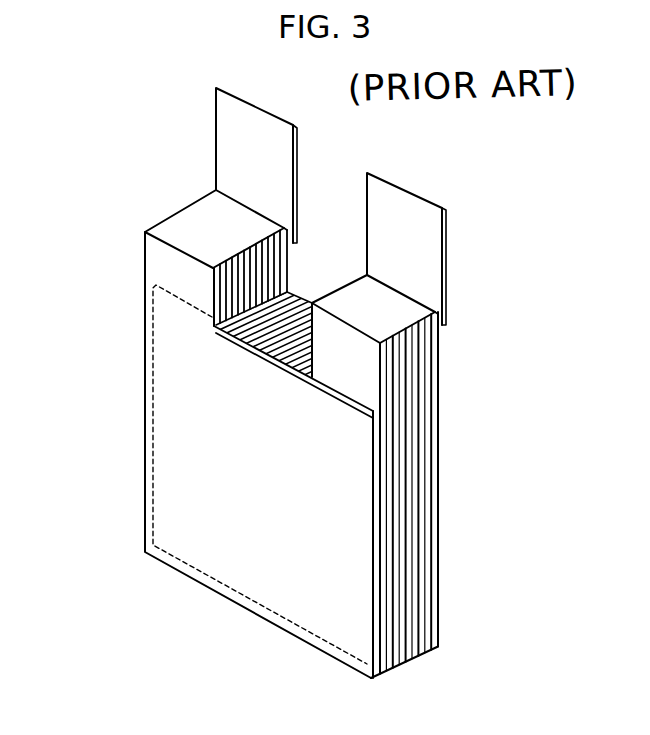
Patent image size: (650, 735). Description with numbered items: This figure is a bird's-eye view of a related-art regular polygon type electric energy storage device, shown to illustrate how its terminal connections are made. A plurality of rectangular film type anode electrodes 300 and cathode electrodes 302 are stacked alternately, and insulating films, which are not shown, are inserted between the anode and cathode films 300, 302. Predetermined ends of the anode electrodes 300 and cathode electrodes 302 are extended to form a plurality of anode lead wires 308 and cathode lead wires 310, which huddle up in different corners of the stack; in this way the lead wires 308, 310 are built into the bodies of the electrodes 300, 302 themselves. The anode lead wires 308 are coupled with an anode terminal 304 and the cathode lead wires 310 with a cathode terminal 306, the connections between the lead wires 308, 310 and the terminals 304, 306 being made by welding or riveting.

The anode electrode 300 is at (250, 597).
The cathode electrode 302 is at (372, 632).
The anode terminal 304 is at (247, 123).
The cathode terminal 306 is at (425, 237).
The anode lead wire 308 is at (176, 272).
The cathode lead wire 310 is at (365, 370).